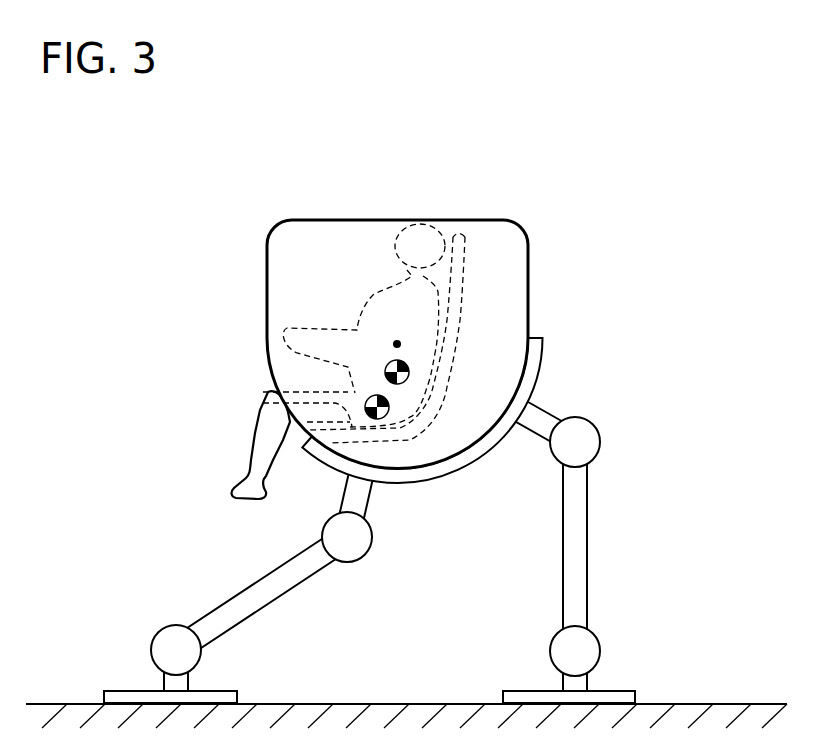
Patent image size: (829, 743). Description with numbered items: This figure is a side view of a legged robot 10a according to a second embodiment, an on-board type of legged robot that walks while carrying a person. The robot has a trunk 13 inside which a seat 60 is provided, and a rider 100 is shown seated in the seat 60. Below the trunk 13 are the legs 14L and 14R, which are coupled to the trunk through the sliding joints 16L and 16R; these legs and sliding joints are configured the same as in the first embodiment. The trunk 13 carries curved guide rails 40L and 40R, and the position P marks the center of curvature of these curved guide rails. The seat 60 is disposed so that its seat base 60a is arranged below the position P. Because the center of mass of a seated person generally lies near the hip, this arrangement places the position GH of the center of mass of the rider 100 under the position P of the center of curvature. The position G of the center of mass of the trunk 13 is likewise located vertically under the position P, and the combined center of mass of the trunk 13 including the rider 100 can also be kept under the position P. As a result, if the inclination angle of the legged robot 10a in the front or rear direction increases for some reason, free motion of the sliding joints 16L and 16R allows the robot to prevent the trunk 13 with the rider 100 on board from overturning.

The legged robot 10a is at (424, 122).
The trunk 13 is at (493, 220).
The left leg 14L is at (294, 596).
The right leg 14R is at (592, 549).
The left sliding joint 16L is at (495, 400).
The right sliding joint 16R is at (495, 400).
The left curved guide rail 40L is at (495, 400).
The right curved guide rail 40R is at (553, 347).
The seat 60 is at (465, 283).
The seat base 60a is at (263, 393).
The rider 100 is at (260, 437).
The center of curvature position P is at (394, 341).
The center of mass position of the trunk G is at (386, 364).
The center of mass position of the rider GH is at (368, 400).